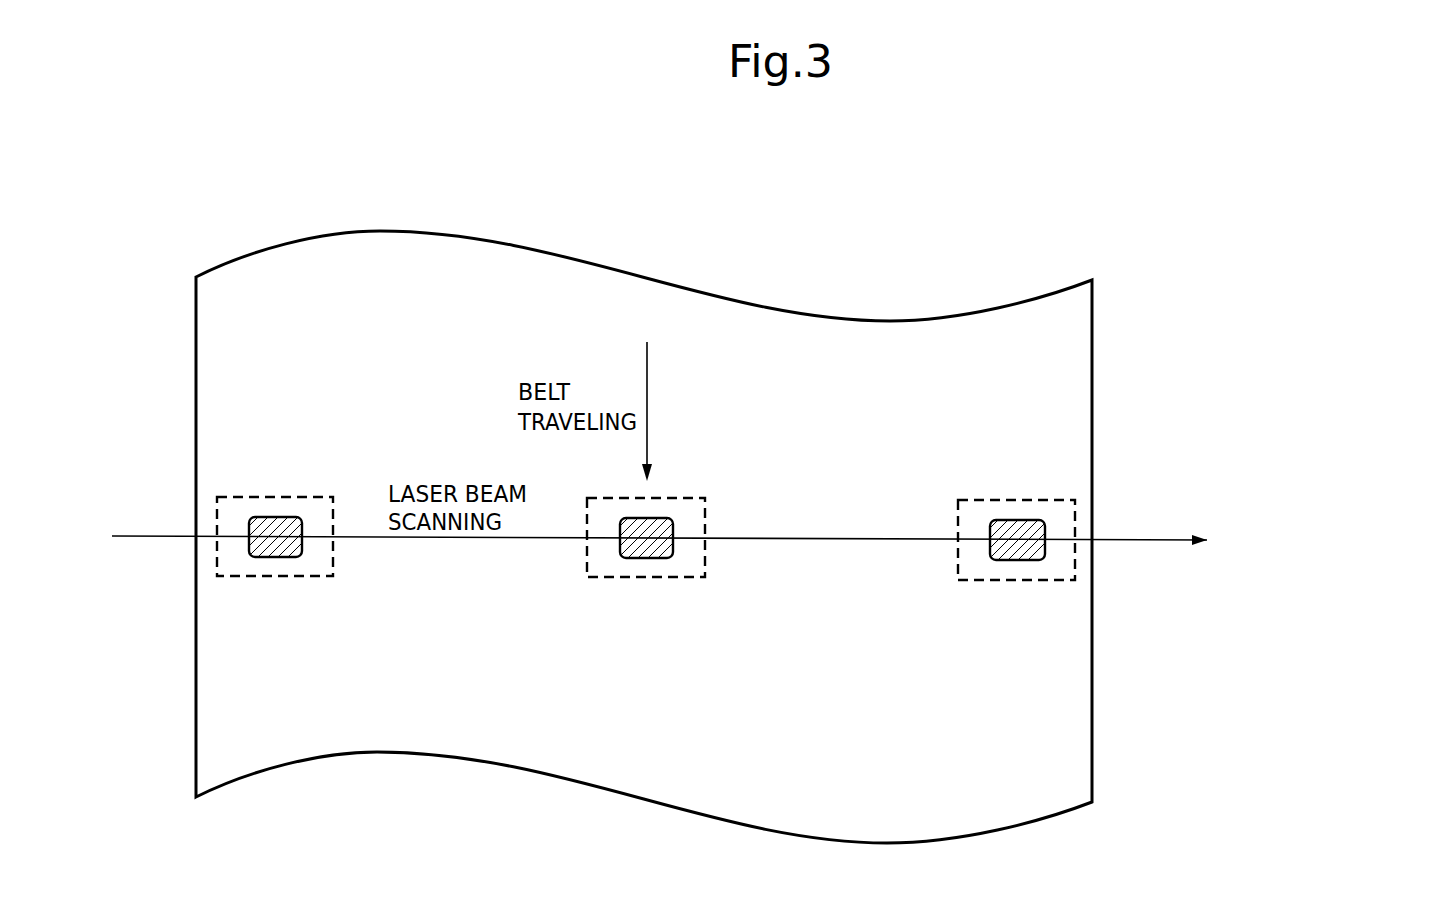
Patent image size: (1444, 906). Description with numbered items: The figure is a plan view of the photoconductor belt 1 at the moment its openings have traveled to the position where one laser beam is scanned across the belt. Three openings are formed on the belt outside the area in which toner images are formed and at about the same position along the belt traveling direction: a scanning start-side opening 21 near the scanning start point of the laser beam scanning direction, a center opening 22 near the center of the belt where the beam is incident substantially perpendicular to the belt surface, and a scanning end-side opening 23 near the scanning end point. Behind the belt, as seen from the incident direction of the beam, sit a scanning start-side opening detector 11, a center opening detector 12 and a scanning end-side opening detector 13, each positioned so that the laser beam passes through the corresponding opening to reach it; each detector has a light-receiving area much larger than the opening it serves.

The photoconductor belt 1 is at (1078, 313).
The scanning start-side opening detector 11 is at (272, 497).
The center opening detector 12 is at (677, 498).
The scanning end-side opening detector 13 is at (1047, 500).
The scanning start-side opening 21 is at (272, 557).
The center opening 22 is at (624, 558).
The scanning end-side opening 23 is at (993, 560).